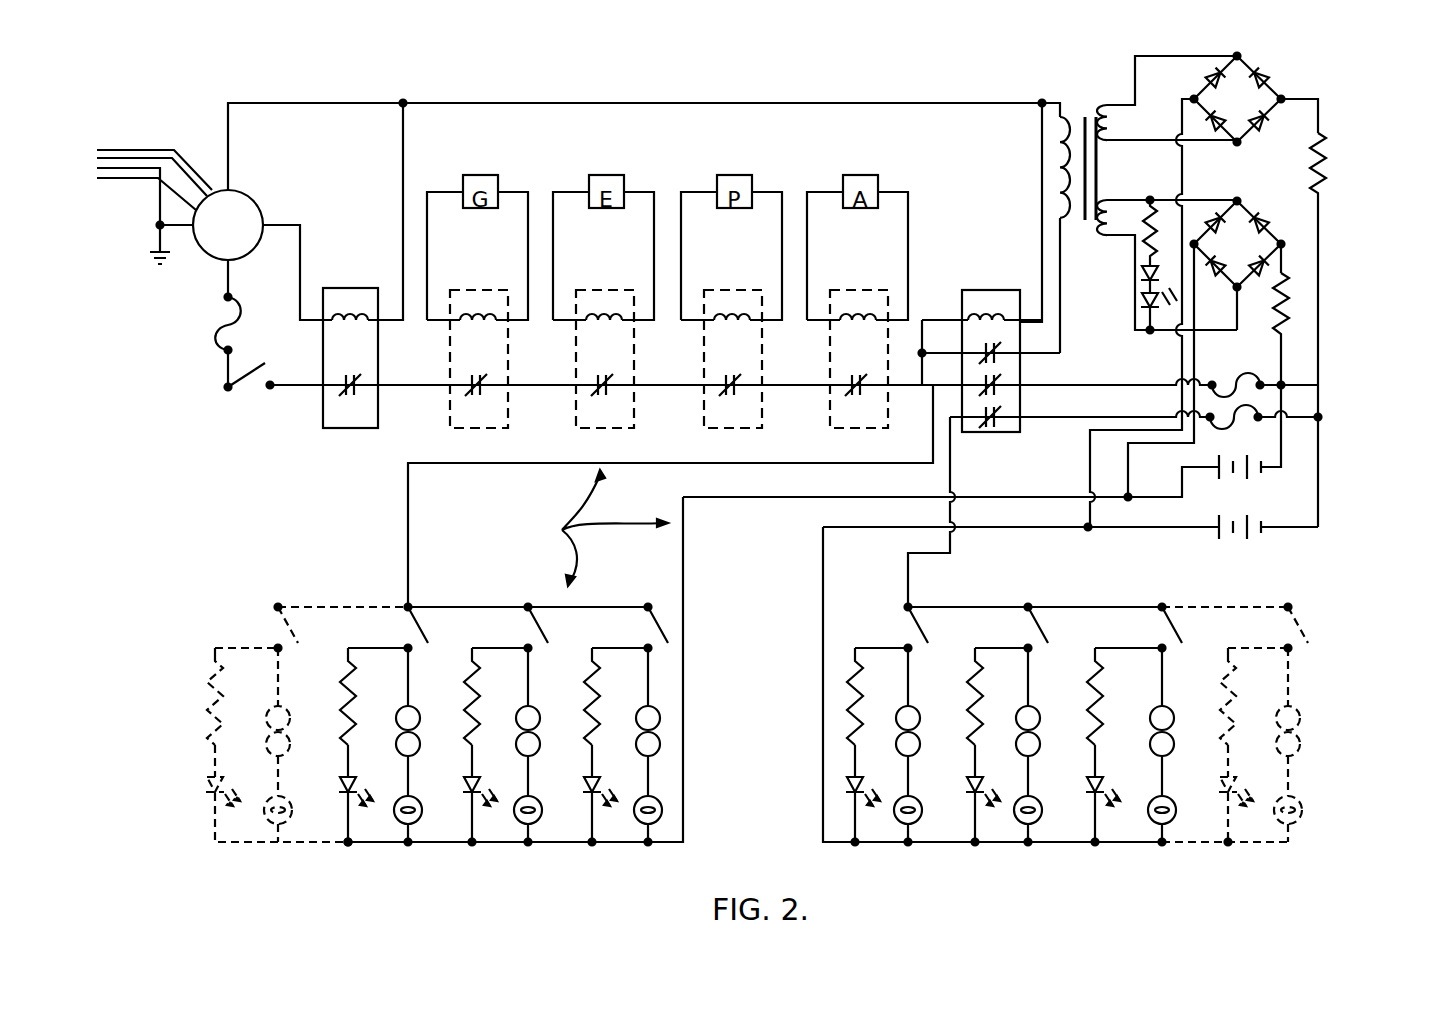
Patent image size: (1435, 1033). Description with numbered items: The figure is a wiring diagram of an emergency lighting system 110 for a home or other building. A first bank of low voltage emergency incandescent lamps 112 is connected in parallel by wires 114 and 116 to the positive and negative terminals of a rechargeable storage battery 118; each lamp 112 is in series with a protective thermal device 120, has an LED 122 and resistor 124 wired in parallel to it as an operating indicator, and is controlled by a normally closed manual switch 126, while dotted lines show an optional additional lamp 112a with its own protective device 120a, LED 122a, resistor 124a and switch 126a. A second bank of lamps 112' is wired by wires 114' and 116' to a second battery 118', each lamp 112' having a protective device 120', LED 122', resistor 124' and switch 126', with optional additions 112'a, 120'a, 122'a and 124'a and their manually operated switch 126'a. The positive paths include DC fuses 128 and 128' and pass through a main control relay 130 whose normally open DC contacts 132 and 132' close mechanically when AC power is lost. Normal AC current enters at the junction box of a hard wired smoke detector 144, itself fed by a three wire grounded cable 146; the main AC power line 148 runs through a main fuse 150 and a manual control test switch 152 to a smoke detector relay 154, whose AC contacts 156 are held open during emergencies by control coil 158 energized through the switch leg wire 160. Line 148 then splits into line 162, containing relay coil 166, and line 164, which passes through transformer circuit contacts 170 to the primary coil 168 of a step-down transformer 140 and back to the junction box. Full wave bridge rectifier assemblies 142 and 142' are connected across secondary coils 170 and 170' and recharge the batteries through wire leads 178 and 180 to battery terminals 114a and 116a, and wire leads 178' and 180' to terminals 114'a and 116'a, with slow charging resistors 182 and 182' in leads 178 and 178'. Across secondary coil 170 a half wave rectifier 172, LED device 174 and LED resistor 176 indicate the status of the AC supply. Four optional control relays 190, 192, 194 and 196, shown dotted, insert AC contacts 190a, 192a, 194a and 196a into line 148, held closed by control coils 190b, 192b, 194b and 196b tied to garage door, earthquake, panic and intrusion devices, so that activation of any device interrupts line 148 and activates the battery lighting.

The emergency lighting system 110 is at (593, 528).
The emergency incandescent lamps 112 is at (550, 837).
The additional lamps 112a is at (288, 822).
The second bank of lamps 112' is at (1061, 837).
The additional lamps 112'a is at (1322, 837).
The wire 114 is at (605, 496).
The wire 114' is at (1098, 512).
The battery terminal 114a is at (1319, 385).
The battery terminal 114'a is at (1359, 421).
The wire 116 is at (737, 669).
The wire 116' is at (1070, 684).
The battery terminal 116a is at (1128, 495).
The battery terminal 116'a is at (1123, 545).
The rechargeable storage battery 118 is at (1254, 470).
The second rechargeable storage battery 118' is at (1255, 531).
The protective thermal overload or circuit breaker device 120 is at (562, 717).
The thermal protective device 120a is at (280, 712).
The protective thermal device 120' is at (1054, 717).
The protective device 120'a is at (1326, 717).
The LED 122 is at (453, 785).
The LED 122a is at (208, 787).
The LED 122' is at (997, 785).
The LED 122'a is at (1256, 785).
The resistor 124 is at (445, 700).
The resistor 124a is at (212, 700).
The resistor 124' is at (971, 679).
The resistor 124'a is at (1202, 700).
The manually operated switch 126 is at (511, 625).
The manually operated switch 126a is at (284, 620).
The control panel switch 126' is at (1071, 625).
The manually operated switch 126'a is at (1333, 625).
The DC circuit fuse 128 is at (1234, 373).
The DC fuse 128' is at (1232, 429).
The main control relay 130 is at (973, 290).
The DC circuit contacts 132 is at (1072, 377).
The DC circuit contacts 132' is at (1134, 434).
The step-down transformer 140 is at (1084, 115).
The full wave bridge rectifier assembly 142 is at (1245, 226).
The full wave bridge rectifier assembly 142' is at (1295, 99).
The smoke detector 144 is at (252, 191).
The three wire grounded cable 146 is at (111, 150).
The main AC power line 148 is at (224, 362).
The main fuse 150 is at (222, 326).
The manual control test switch 152 is at (245, 377).
The smoke detector relay 154 is at (335, 288).
The AC circuit contacts 156 is at (340, 396).
The control coil 158 is at (338, 328).
The switch leg wire 160 is at (402, 128).
The line 162 is at (928, 318).
The line 164 is at (230, 128).
The relay coil 166 is at (992, 312).
The primary coil 168 is at (1041, 172).
The secondary coil 170 is at (1015, 282).
The secondary coil 170' is at (1156, 98).
The half wave rectifier 172 is at (1141, 304).
The LED device 174 is at (1141, 277).
The LED resistor 176 is at (1150, 206).
The wire lead 178 is at (1337, 258).
The wire lead 178' is at (1340, 116).
The wire lead 180 is at (1184, 370).
The wire lead 180' is at (1165, 313).
The slow charging resistor 182 is at (1327, 370).
The slow charging resistor 182' is at (1354, 330).
The optional control relay 190 is at (462, 290).
The AC circuit contacts 190a is at (470, 381).
The control coil 190b is at (470, 328).
The optional control relay 192 is at (588, 290).
The AC circuit contacts 192a is at (596, 381).
The control coil 192b is at (596, 328).
The optional control relay 194 is at (716, 290).
The AC circuit contacts 194a is at (724, 381).
The control coil 194b is at (724, 328).
The optional control relay 196 is at (842, 290).
The AC circuit contacts 196a is at (850, 381).
The control coil 196b is at (850, 328).